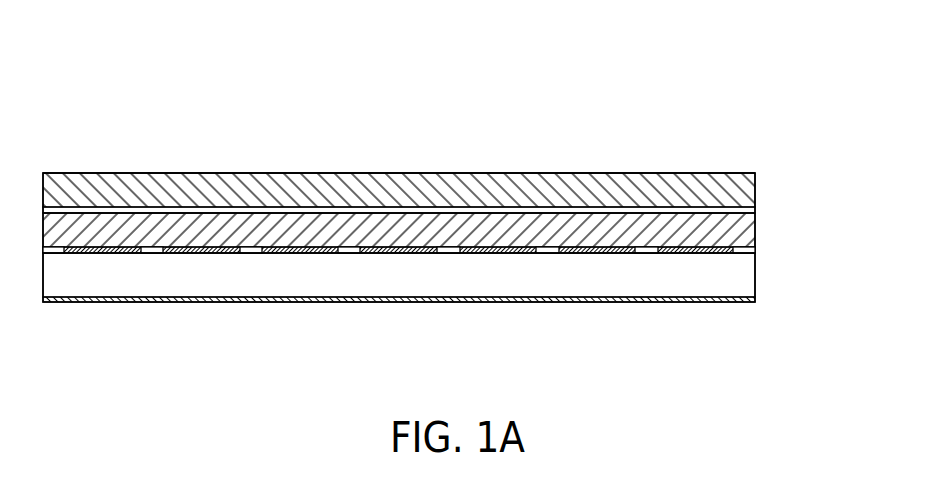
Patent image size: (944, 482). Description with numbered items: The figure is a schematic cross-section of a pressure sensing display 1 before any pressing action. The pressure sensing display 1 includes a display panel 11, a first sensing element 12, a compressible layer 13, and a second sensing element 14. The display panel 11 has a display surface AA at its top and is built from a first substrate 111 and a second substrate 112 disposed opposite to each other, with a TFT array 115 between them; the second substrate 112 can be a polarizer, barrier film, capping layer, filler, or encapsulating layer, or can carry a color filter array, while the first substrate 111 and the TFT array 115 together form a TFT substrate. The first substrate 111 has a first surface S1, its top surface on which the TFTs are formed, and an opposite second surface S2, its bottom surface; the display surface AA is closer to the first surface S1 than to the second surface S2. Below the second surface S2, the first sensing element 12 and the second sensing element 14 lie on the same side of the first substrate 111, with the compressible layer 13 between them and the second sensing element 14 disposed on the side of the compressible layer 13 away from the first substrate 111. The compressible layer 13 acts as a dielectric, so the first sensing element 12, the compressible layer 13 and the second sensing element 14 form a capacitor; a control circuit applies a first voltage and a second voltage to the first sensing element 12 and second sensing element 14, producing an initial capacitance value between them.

The pressure sensing display 1 is at (163, 60).
The display panel 11 is at (458, 204).
The second substrate 112 is at (755, 186).
The TFT array 115 is at (755, 210).
The first substrate 111 is at (743, 233).
The display surface AA is at (608, 173).
The first surface S1 is at (500, 213).
The second surface S2 is at (443, 253).
The first sensing element 12 is at (493, 253).
The compressible layer 13 is at (733, 277).
The second sensing element 14 is at (610, 302).